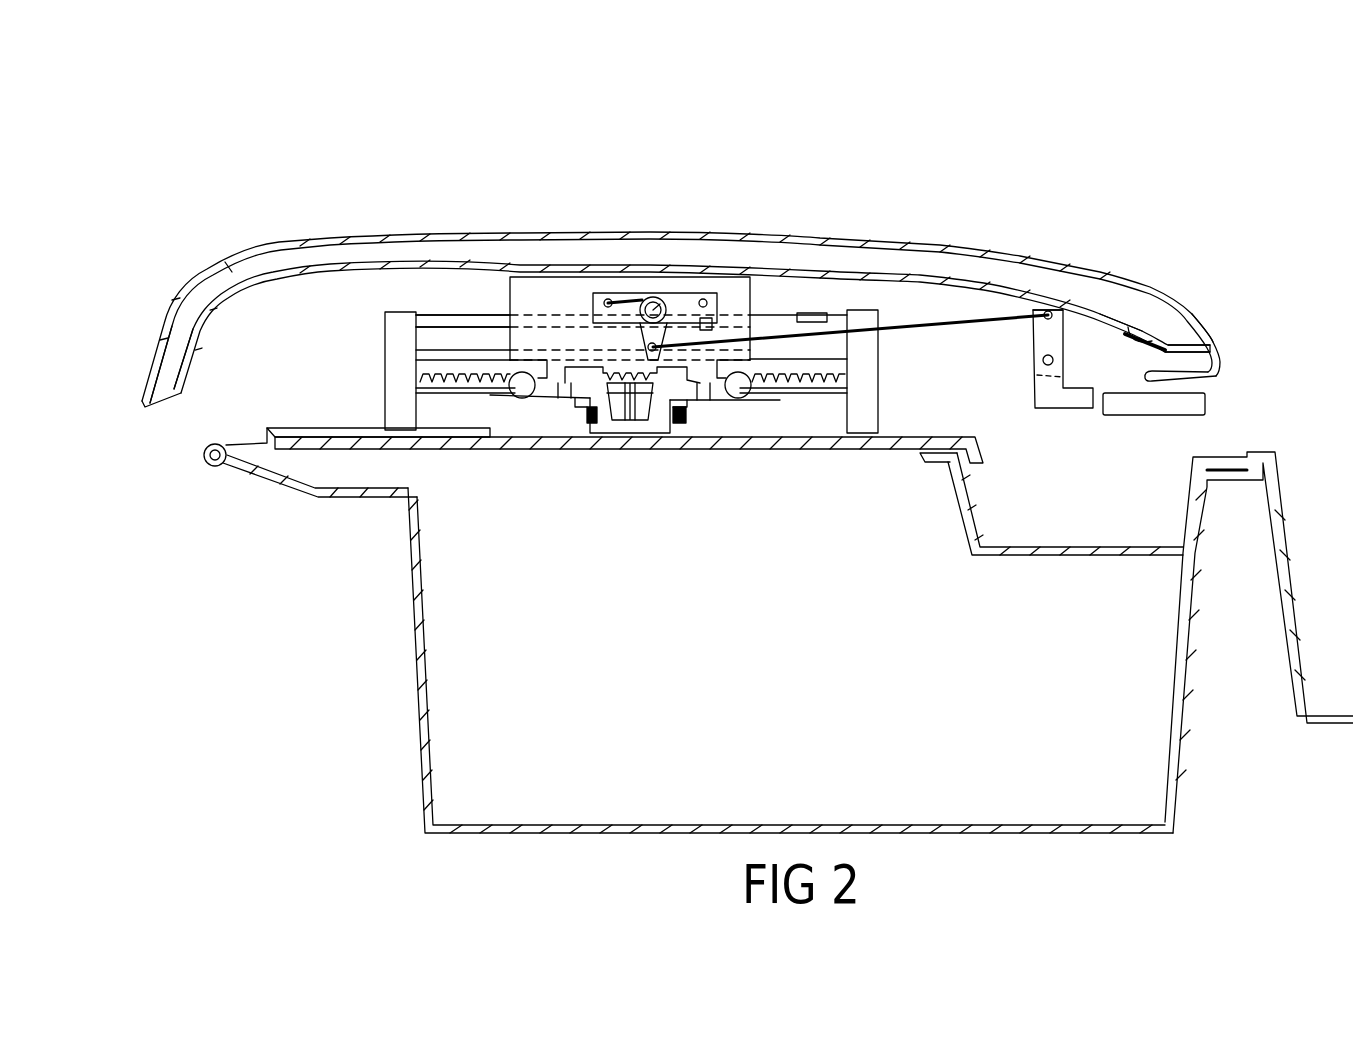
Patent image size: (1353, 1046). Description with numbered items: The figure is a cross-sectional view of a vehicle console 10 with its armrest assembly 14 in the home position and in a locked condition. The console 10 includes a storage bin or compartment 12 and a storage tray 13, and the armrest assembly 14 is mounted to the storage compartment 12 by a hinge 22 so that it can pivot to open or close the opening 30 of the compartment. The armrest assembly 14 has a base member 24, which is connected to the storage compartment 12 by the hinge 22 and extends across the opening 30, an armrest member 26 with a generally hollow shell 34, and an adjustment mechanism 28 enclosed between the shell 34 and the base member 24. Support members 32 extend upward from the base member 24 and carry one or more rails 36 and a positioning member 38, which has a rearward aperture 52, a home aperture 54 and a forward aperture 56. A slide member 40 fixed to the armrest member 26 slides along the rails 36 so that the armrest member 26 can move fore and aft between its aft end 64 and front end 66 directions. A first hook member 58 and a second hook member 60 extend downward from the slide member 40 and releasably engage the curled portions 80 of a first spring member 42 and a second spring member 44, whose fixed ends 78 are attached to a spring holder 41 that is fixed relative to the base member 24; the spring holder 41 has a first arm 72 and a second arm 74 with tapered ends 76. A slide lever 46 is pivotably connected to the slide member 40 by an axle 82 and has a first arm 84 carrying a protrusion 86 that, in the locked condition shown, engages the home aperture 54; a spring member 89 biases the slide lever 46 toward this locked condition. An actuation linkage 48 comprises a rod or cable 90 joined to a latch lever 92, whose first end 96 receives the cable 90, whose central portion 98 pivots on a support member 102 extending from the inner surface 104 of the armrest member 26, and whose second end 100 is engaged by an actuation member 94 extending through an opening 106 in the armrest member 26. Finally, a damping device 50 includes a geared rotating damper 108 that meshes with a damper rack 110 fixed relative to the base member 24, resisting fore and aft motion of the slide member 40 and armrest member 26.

The console 10 is at (408, 182).
The storage bin or compartment 12 is at (425, 665).
The storage tray 13 is at (1112, 546).
The armrest assembly 14 is at (326, 234).
The hinge 22 is at (222, 468).
The base member 24 is at (878, 437).
The armrest member 26 is at (1027, 255).
The adjustment mechanism 28 is at (352, 345).
The opening 30 is at (920, 455).
The support members 32 is at (390, 413).
The shell 34 is at (213, 320).
The rails 36 is at (445, 338).
The positioning member 38 is at (441, 330).
The slide member 40 is at (512, 290).
The spring holder 41 is at (657, 410).
The first spring member 42 is at (500, 425).
The second spring member 44 is at (745, 402).
The slide lever 46 is at (636, 295).
The actuation linkage 48 is at (980, 305).
The damping device 50 is at (632, 420).
The rearward aperture 52 is at (558, 305).
The home aperture 54 is at (730, 318).
The forward aperture 56 is at (838, 310).
The first hook member 58 is at (542, 400).
The second hook member 60 is at (706, 382).
The aft end 64 is at (170, 370).
The front end 66 is at (1197, 324).
The first arm 72 is at (570, 393).
The second arm 74 is at (687, 403).
The tapered ends 76 is at (565, 405).
The fixed end 78 is at (580, 405).
The curled portion 80 is at (515, 373).
The axle 82 is at (683, 296).
The first arm 84 is at (668, 323).
The protrusion 86 is at (722, 312).
The spring member 89 is at (605, 300).
The rod or cable 90 is at (953, 323).
The latch lever 92 is at (1015, 408).
The actuation member 94 is at (1173, 410).
The first end 96 is at (1037, 376).
The central portion 98 is at (1060, 372).
The second end 100 is at (1087, 403).
The support member 102 is at (1135, 287).
The inner surface 104 is at (1170, 308).
The opening 106 is at (1208, 378).
The damper 108 is at (641, 397).
The damper rack 110 is at (447, 350).